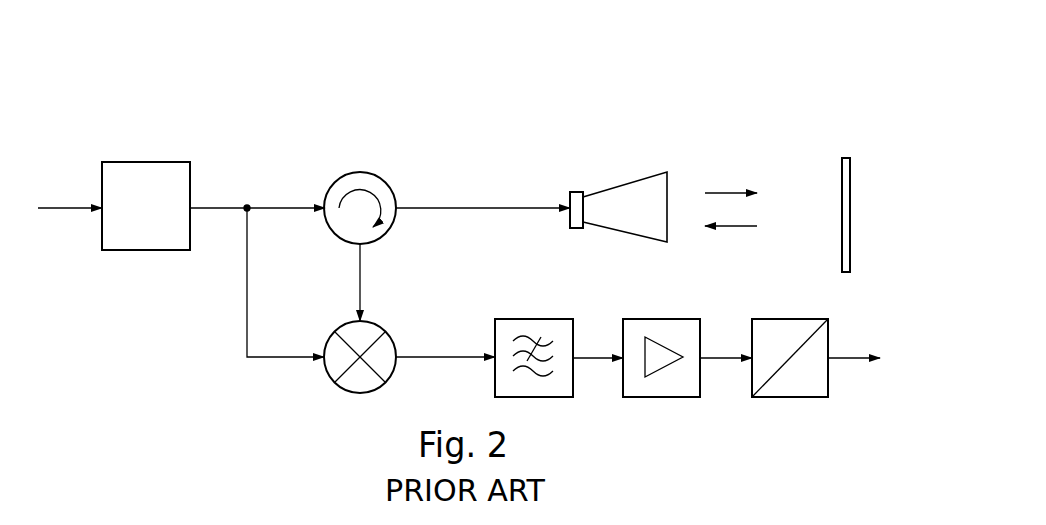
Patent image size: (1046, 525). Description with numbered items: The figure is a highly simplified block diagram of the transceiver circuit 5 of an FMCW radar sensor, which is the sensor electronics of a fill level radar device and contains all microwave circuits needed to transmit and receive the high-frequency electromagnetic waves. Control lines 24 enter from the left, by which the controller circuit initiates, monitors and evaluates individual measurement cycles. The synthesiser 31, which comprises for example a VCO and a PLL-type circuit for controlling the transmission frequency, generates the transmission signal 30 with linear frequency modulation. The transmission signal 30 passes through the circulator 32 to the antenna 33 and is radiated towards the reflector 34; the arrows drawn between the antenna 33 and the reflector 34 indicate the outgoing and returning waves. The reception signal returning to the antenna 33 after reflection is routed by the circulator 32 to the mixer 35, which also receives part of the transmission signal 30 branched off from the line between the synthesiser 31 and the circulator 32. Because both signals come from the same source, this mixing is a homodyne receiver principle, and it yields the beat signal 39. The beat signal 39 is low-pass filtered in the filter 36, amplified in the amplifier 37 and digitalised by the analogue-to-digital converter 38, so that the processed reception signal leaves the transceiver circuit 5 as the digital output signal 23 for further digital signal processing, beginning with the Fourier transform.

The transceiver circuit 5 is at (202, 69).
The output signal 23 is at (841, 356).
The control lines 24 is at (83, 205).
The transmission signal 30 is at (298, 104).
The synthesiser 31 is at (163, 162).
The circulator 32 is at (370, 173).
The antenna 33 is at (643, 190).
The reflector 34 is at (852, 190).
The mixer 35 is at (345, 330).
The filter 36 is at (556, 318).
The amplifier 37 is at (652, 319).
The analogue-to-digital converter 38 is at (785, 319).
The beat signal 39 is at (440, 355).